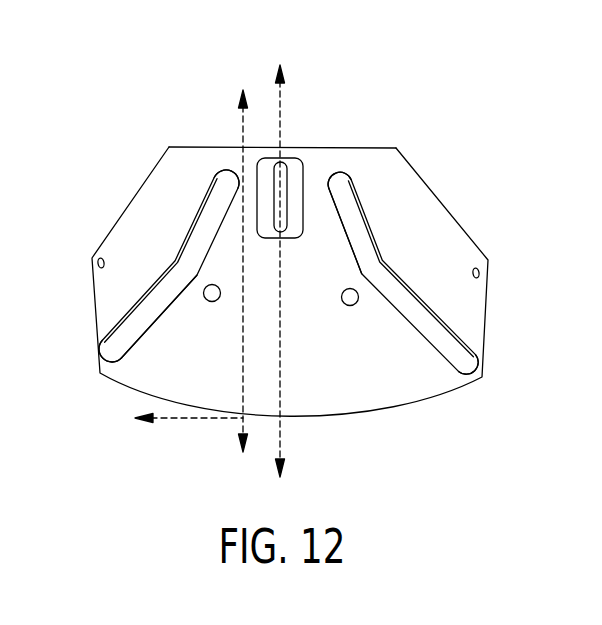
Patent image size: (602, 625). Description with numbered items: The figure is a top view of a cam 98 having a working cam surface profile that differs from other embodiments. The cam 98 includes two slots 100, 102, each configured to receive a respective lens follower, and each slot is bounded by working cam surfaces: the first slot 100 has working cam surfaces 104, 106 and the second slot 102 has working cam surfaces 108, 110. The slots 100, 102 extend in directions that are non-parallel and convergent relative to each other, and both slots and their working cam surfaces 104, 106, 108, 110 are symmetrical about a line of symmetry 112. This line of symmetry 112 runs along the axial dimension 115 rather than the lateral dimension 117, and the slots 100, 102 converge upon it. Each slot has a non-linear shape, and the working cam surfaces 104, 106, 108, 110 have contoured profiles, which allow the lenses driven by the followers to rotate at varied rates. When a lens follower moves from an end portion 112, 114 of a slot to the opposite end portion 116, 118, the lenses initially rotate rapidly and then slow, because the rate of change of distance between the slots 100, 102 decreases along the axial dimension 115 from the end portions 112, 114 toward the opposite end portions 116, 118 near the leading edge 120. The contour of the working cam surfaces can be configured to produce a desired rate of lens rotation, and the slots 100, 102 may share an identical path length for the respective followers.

The cam 98 is at (477, 143).
The slot 100 is at (163, 283).
The slot 102 is at (443, 320).
The working cam surface 104 is at (123, 317).
The working cam surface 106 is at (158, 320).
The working cam surface 108 is at (372, 248).
The working cam surface 110 is at (336, 204).
The line of symmetry 112 is at (283, 107).
The end portion 114 is at (470, 360).
The axial dimension 115 is at (238, 130).
The end portion 116 is at (228, 172).
The lateral dimension 117 is at (195, 421).
The end portion 118 is at (352, 150).
The leading edge 120 is at (333, 167).